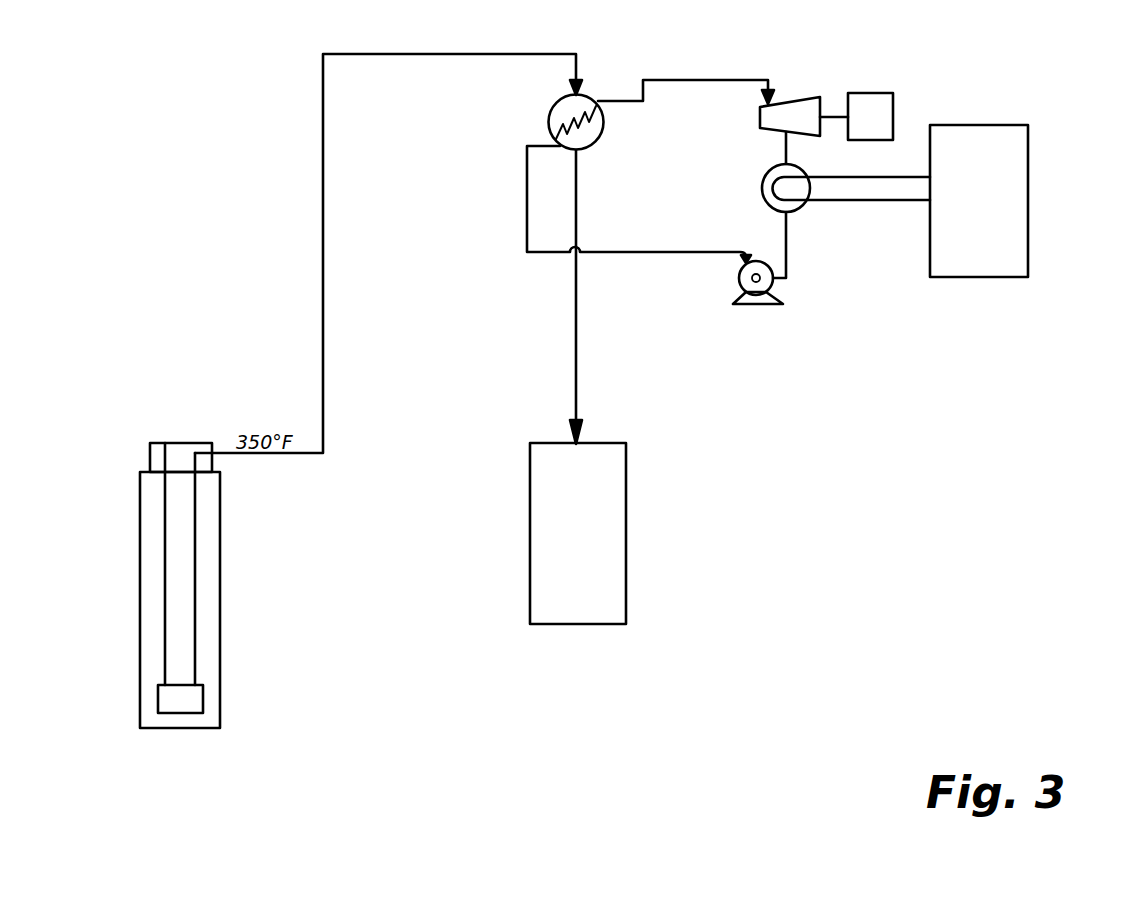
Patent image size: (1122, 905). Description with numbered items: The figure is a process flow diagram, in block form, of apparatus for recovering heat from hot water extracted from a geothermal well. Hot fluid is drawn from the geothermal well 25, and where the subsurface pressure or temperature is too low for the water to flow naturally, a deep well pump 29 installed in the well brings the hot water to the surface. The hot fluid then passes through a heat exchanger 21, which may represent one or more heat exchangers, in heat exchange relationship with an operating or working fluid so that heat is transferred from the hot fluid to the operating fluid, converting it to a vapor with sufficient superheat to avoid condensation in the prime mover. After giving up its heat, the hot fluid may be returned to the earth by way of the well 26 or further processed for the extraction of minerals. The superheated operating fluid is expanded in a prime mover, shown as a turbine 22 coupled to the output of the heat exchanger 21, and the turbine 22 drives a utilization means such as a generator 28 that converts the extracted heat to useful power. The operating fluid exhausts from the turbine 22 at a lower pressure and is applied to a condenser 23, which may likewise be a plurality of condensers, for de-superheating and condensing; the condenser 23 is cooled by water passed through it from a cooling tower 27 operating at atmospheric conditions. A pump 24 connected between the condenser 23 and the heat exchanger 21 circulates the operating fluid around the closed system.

The heat exchanger 21 is at (603, 128).
The turbine 22 is at (760, 110).
The condenser 23 is at (766, 180).
The pump 24 is at (784, 301).
The geothermal well 25 is at (170, 548).
The well 26 is at (537, 463).
The cooling tower 27 is at (1016, 156).
The generator 28 is at (894, 104).
The deep well pump 29 is at (198, 696).